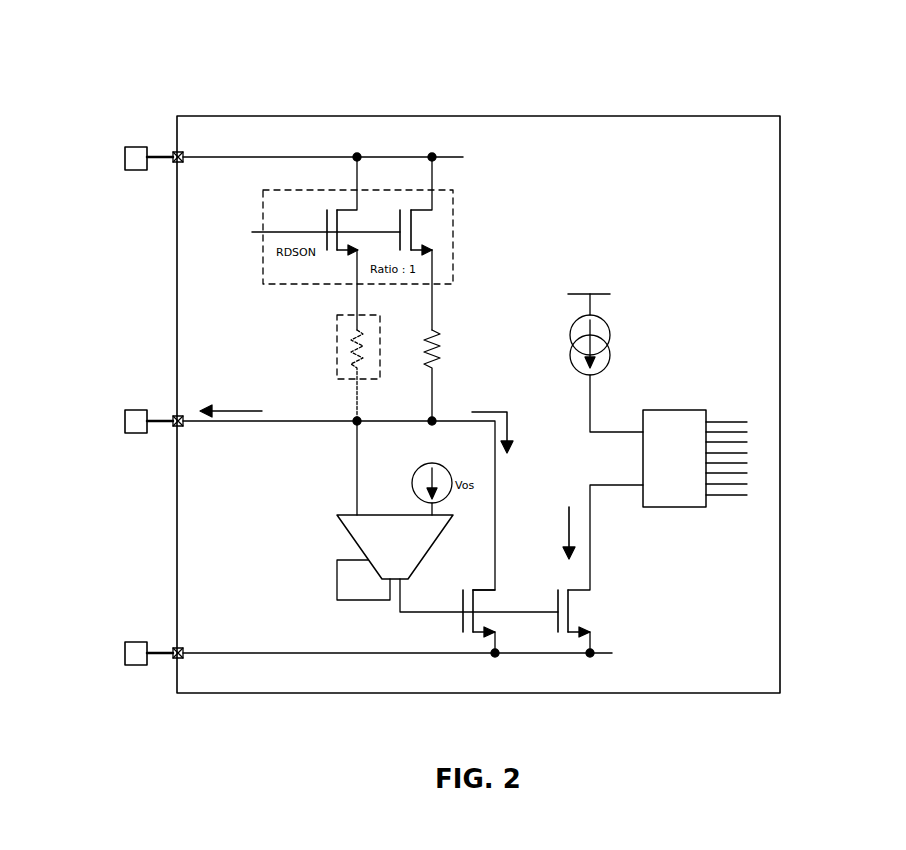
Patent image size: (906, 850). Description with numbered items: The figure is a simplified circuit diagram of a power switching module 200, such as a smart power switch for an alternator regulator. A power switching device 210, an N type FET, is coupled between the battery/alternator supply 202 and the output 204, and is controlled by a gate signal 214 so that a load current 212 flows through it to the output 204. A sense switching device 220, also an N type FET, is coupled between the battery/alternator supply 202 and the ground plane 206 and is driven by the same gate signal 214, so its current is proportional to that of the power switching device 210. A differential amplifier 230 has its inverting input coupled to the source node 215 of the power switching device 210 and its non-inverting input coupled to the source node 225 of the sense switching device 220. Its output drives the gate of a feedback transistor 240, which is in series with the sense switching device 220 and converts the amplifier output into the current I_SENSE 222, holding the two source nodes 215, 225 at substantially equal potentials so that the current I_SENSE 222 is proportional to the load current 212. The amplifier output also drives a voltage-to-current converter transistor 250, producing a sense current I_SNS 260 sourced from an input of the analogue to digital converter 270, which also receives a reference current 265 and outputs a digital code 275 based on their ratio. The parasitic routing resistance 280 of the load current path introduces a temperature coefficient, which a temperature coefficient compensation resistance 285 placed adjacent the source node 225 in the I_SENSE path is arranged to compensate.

The power switching module 200 is at (513, 84).
The battery/alternator supply 202 is at (95, 148).
The output 204 is at (104, 412).
The ground plane 206 is at (104, 644).
The power switching device 210 is at (327, 223).
The load current 212 is at (241, 394).
The gate signal 214 is at (241, 226).
The source node of the power switching device 215 is at (356, 292).
The sense switching device 220 is at (400, 223).
The current I_SENSE 222 is at (499, 396).
The source node of the sense switching device 225 is at (431, 292).
The differential amplifier 230 is at (339, 532).
The feedback transistor 240 is at (463, 600).
The voltage-to-current converter transistor 250 is at (558, 600).
The sense current I_SNS 260 is at (566, 529).
The reference current 265 is at (612, 349).
The analogue to digital converter 270 is at (686, 408).
The digital code 275 is at (729, 504).
The parasitic routing resistance 280 is at (337, 360).
The temperature coefficient compensation resistance 285 is at (440, 336).